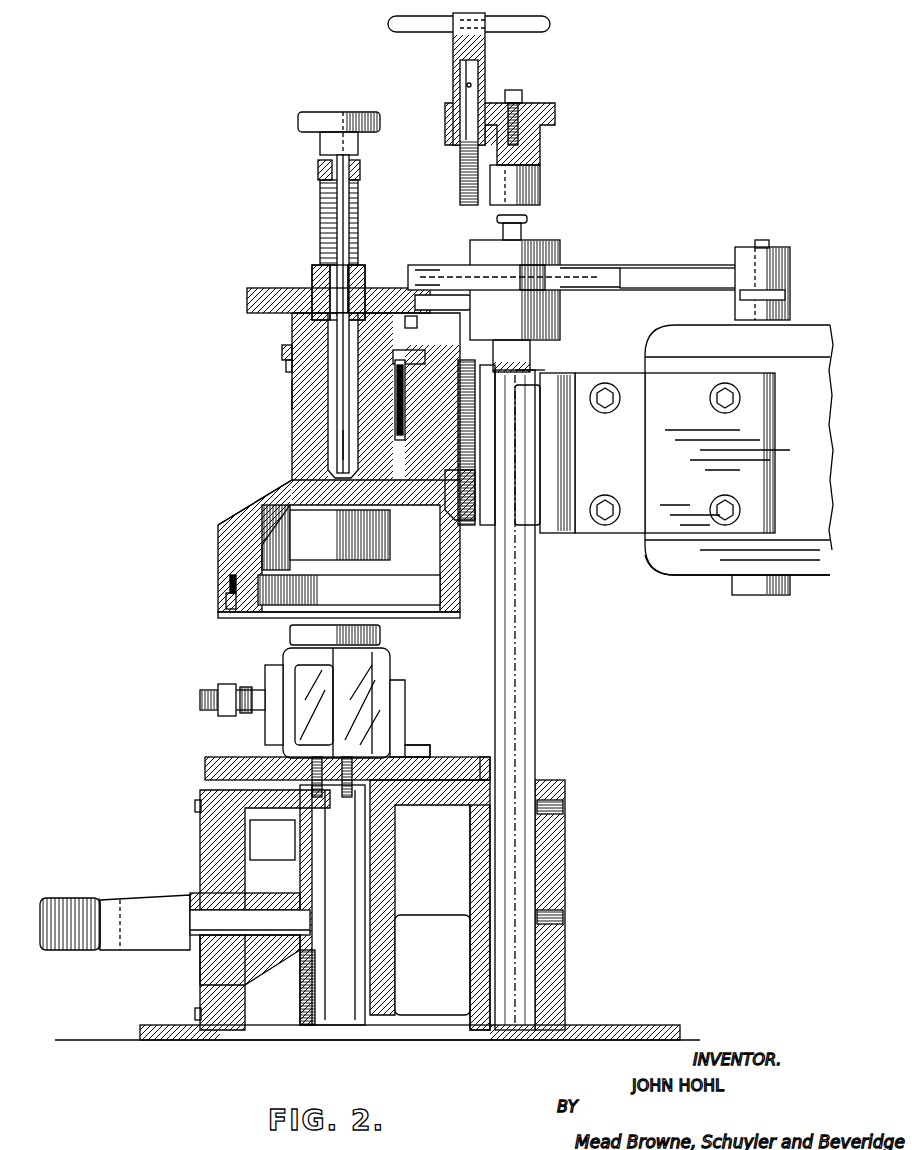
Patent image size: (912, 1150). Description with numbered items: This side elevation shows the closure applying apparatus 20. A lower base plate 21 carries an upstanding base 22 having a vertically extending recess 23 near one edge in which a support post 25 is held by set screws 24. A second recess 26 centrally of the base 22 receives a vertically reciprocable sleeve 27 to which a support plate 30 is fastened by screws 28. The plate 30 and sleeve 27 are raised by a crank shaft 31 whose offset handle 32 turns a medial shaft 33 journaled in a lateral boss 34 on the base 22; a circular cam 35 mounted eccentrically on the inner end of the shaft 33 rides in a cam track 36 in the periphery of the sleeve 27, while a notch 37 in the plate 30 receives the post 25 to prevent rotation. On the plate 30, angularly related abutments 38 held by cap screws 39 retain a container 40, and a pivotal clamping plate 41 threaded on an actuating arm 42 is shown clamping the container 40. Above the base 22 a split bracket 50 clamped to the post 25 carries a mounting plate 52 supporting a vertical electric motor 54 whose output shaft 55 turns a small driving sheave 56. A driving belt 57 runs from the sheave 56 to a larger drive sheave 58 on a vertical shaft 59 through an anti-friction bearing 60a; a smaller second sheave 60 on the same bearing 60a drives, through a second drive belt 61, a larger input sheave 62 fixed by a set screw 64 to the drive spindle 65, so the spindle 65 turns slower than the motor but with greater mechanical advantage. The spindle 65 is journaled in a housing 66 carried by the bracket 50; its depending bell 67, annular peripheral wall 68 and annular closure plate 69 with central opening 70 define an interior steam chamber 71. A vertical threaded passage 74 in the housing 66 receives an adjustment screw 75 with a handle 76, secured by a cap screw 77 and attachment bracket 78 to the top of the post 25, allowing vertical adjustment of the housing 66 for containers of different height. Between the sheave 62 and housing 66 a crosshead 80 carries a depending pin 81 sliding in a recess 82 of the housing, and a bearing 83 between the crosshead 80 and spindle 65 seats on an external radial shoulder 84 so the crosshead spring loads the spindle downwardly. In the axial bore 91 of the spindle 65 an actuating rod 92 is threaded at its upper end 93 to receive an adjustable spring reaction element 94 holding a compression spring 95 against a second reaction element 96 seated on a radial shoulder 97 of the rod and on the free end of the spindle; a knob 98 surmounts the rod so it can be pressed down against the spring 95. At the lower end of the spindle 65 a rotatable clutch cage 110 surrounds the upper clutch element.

The closure applying apparatus 20 is at (548, 562).
The lower base plate 21 is at (598, 1027).
The upstanding base 22 is at (582, 852).
The vertically extending recess 23 is at (485, 975).
The set screws 24 is at (563, 805).
The support post 25 is at (535, 739).
The second vertically extending recess 26 is at (385, 960).
The vertically reciprocable sleeve 27 is at (385, 880).
The screws 28 is at (347, 797).
The support plate 30 is at (443, 765).
The crank shaft 31 is at (187, 886).
The offset handle 32 is at (140, 895).
The medial shaft 33 is at (200, 935).
The lateral boss 34 is at (250, 945).
The circular cam 35 is at (300, 985).
The cam track 36 is at (312, 900).
The notch 37 is at (490, 770).
The abutments 38 is at (406, 705).
The cap screws 39 is at (412, 748).
The container 40 is at (396, 664).
The pivotal clamping plate 41 is at (268, 672).
The actuating arm 42 is at (252, 694).
The bracket 50 is at (570, 488).
The mounting plate 52 is at (739, 450).
The electric motor 54 is at (690, 568).
The output shaft 55 is at (770, 242).
The driving sheave 56 is at (782, 292).
The driving belt 57 is at (675, 270).
The drive sheave 58 is at (600, 266).
The vertical shaft 59 is at (525, 240).
The second sheave 60 is at (545, 325).
The anti-friction bearing 60a is at (548, 264).
The second drive belt 61 is at (443, 310).
The input sheave 62 is at (388, 290).
The set screw 64 is at (380, 325).
The drive spindle 65 is at (312, 278).
The housing 66 is at (292, 428).
The bell 67 is at (240, 512).
The annular peripheral wall 68 is at (218, 540).
The annular closure plate 69 is at (228, 612).
The central opening 70 is at (290, 618).
The steam chamber 71 is at (349, 590).
The vertical threaded passage 74 is at (465, 470).
The adjustment screw 75 is at (465, 205).
The handle 76 is at (512, 30).
The cap screw 77 is at (522, 96).
The attachment bracket 78 is at (555, 103).
The crosshead 80 is at (282, 352).
The depending pin 81 is at (415, 372).
The recess 82 is at (406, 392).
The bearing 83 is at (288, 372).
The external radial shoulder 84 is at (292, 395).
The axial bore 91 is at (340, 440).
The actuating rod 92 is at (335, 322).
The threaded upper end 93 is at (349, 222).
The adjustable spring reaction element 94 is at (360, 170).
The compression spring 95 is at (358, 200).
The second reaction element 96 is at (360, 266).
The radial shoulder 97 is at (318, 268).
The knob 98 is at (300, 124).
The cage 110 is at (326, 537).